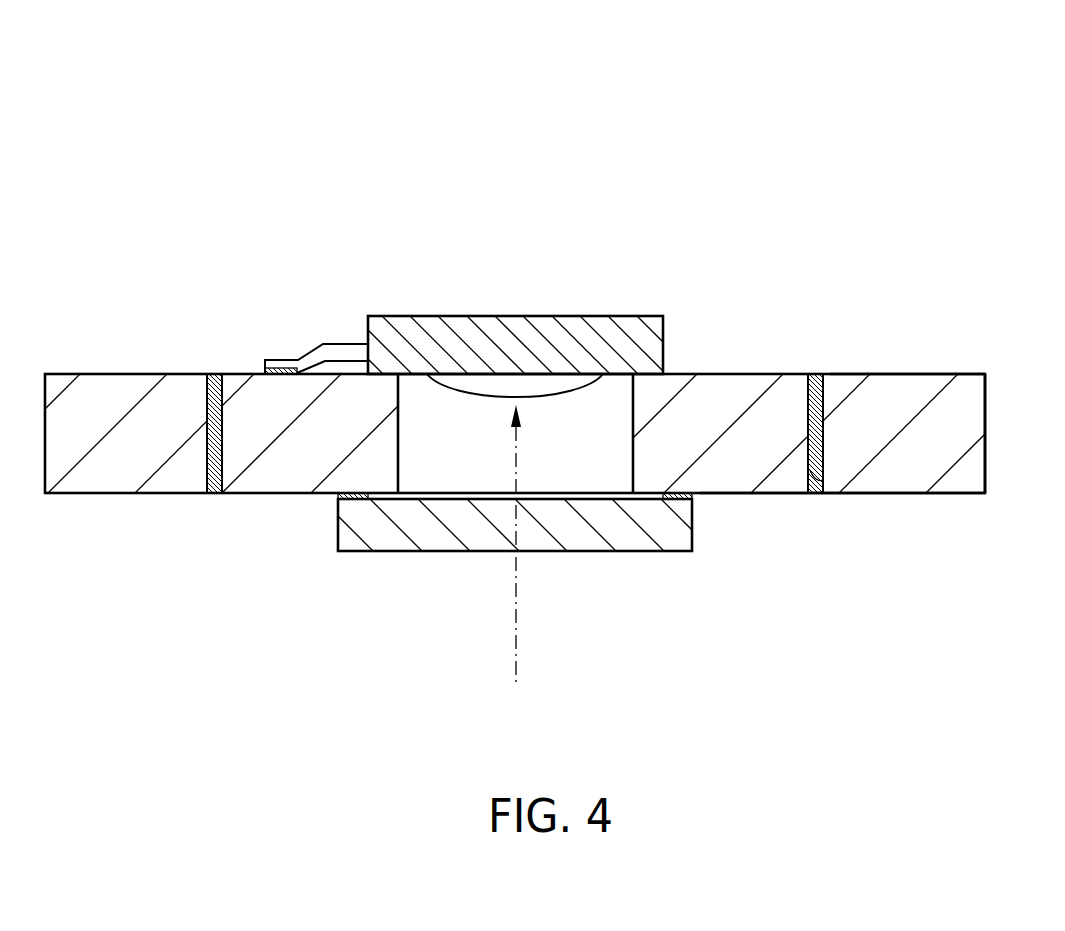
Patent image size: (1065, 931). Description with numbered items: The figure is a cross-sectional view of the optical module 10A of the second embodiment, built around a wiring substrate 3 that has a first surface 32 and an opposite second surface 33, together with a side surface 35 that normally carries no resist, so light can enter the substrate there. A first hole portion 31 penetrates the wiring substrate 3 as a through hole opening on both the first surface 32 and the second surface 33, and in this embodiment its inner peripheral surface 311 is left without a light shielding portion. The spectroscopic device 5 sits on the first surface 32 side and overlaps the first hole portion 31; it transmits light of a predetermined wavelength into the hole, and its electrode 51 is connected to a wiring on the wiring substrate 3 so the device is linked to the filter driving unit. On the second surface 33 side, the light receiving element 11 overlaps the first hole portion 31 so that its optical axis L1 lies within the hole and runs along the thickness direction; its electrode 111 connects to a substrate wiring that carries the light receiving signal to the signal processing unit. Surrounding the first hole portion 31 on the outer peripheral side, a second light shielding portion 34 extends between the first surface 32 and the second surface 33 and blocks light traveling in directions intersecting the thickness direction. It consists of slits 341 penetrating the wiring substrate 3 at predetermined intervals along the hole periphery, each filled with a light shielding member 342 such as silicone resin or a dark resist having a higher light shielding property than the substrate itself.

The optical module 10A is at (532, 127).
The wiring substrate 3 is at (918, 387).
The first hole portion 31 is at (612, 414).
The inner peripheral surface 311 is at (632, 463).
The first surface 32 is at (912, 493).
The second surface 33 is at (968, 375).
The second light shielding portion 34 is at (837, 355).
The slit 341 is at (818, 468).
The light shielding member 342 is at (820, 375).
The side surface 35 is at (985, 425).
The light receiving element 11 is at (517, 333).
The electrode 111 is at (265, 372).
The spectroscopic device 5 is at (583, 545).
The electrode 51 is at (338, 496).
The optical axis L1 is at (515, 561).